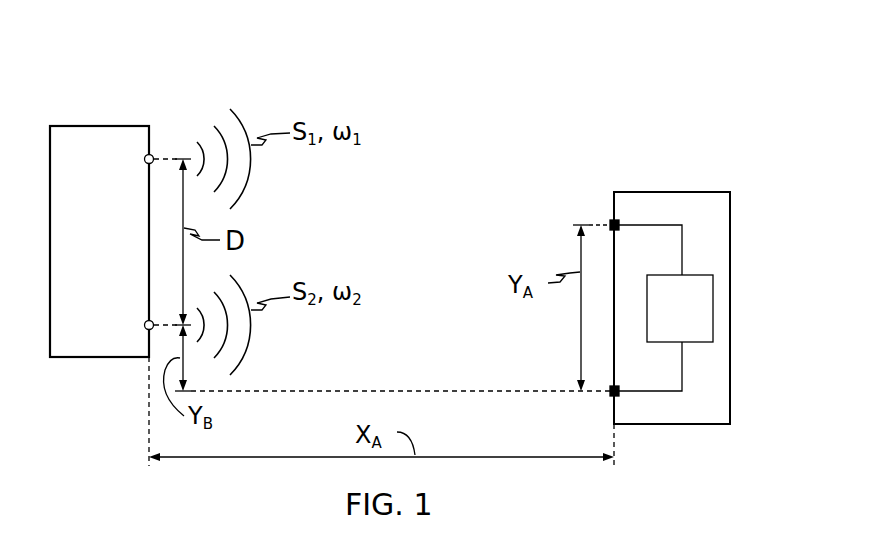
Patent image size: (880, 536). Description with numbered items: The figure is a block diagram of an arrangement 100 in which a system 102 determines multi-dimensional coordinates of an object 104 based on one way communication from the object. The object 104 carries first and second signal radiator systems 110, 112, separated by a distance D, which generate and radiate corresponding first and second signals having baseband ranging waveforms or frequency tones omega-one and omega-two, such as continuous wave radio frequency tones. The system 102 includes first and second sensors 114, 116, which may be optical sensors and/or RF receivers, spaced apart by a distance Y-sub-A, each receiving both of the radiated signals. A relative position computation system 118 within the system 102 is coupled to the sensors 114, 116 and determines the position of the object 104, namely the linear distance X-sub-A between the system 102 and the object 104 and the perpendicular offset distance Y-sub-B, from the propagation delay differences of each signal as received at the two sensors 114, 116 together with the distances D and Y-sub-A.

The relative position system environment 100 is at (360, 55).
The system 102 is at (630, 190).
The object 104 is at (124, 125).
The first signal radiator system 110 is at (146, 163).
The second signal radiator system 112 is at (146, 321).
The first sensor 114 is at (619, 230).
The second sensor 116 is at (619, 386).
The relative position computation system 118 is at (697, 273).